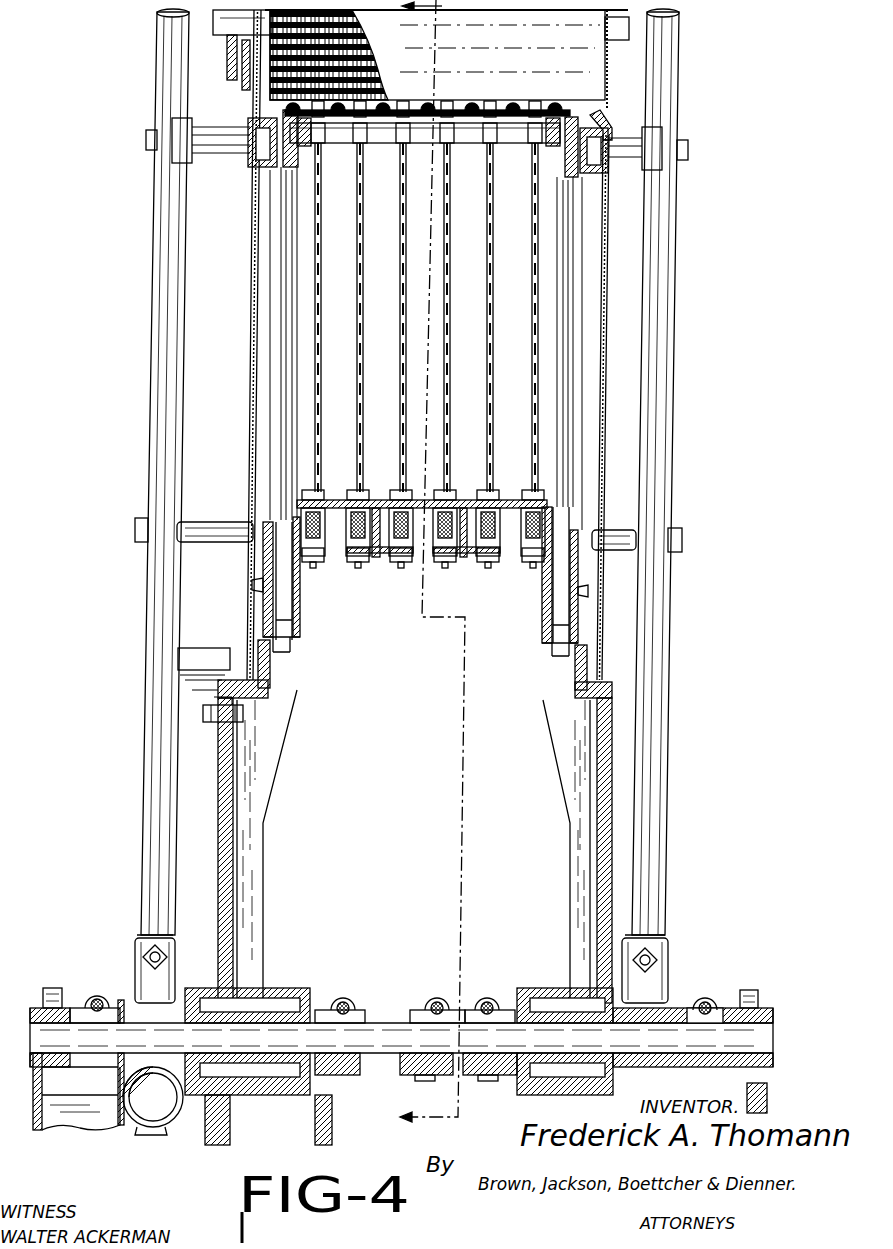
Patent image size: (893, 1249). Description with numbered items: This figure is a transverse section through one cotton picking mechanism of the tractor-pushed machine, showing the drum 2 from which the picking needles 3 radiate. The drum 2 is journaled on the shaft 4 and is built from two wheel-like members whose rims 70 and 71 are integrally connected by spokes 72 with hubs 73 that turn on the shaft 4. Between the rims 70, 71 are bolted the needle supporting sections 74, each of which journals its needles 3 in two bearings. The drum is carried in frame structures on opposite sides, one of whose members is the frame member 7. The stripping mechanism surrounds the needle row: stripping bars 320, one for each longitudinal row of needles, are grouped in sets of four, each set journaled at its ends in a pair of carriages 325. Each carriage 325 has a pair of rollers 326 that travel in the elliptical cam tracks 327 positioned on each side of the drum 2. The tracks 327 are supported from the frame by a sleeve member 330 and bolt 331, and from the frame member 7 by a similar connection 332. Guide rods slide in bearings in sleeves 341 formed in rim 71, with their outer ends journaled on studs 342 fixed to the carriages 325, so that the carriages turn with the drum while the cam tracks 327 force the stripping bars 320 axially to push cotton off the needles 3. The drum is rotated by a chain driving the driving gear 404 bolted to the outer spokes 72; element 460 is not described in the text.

The drum 2 is at (422, 566).
The picking needles 3 is at (493, 412).
The shaft 4 is at (760, 1054).
The frame member 7 is at (166, 418).
The rim 70 is at (258, 608).
The rim 71 is at (582, 624).
The spokes 72 is at (248, 895).
The hubs 73 is at (268, 1000).
The needle supporting sections 74 is at (340, 565).
The stripping bars 320 is at (383, 140).
The carriages 325 is at (300, 140).
The rollers 326 is at (254, 166).
The cam tracks 327 is at (258, 286).
The sleeve member 330 is at (217, 522).
The bolt 331 is at (141, 535).
The connection 332 is at (185, 118).
The sleeves 341 is at (300, 622).
The studs 342 is at (288, 122).
The driving gear 404 is at (215, 728).
The bearing lug 460 is at (96, 1000).